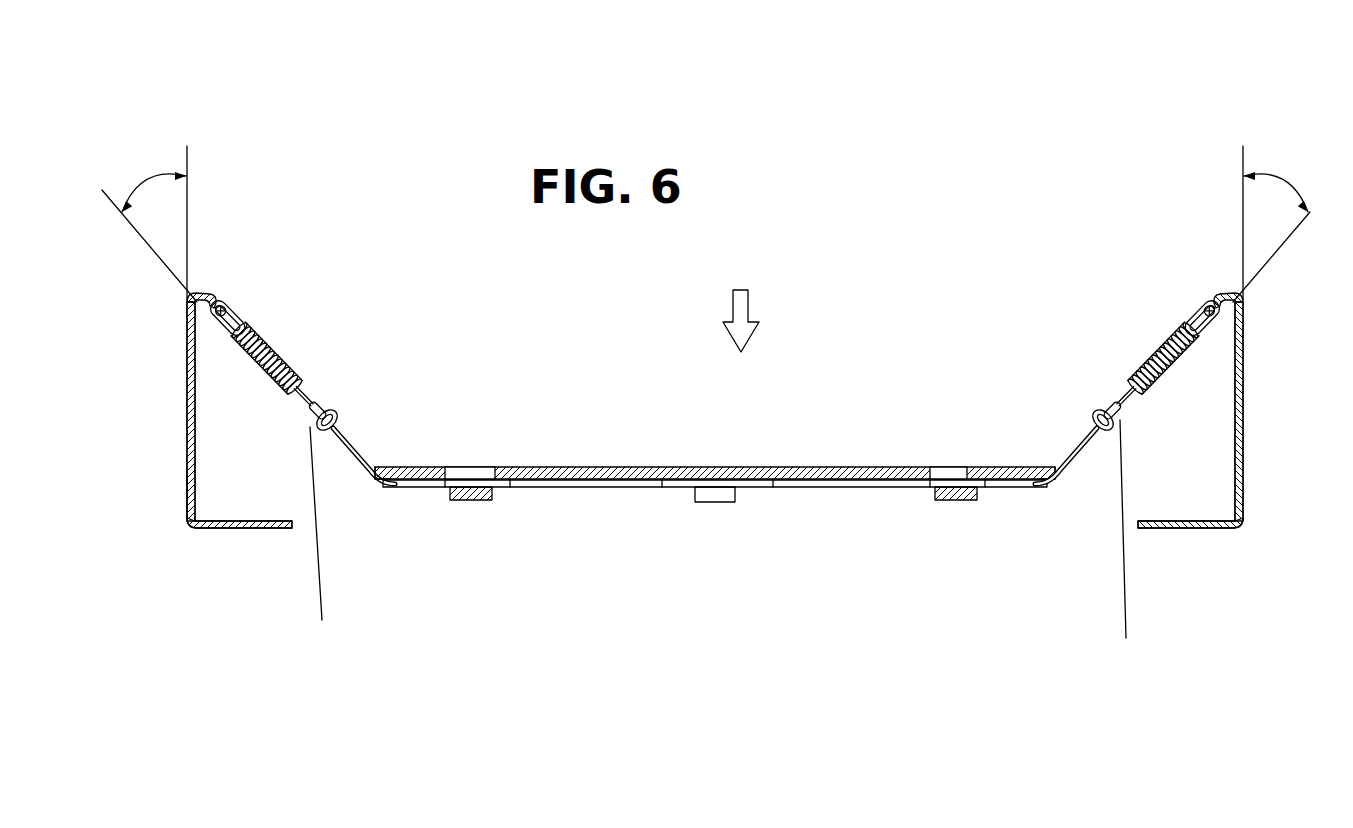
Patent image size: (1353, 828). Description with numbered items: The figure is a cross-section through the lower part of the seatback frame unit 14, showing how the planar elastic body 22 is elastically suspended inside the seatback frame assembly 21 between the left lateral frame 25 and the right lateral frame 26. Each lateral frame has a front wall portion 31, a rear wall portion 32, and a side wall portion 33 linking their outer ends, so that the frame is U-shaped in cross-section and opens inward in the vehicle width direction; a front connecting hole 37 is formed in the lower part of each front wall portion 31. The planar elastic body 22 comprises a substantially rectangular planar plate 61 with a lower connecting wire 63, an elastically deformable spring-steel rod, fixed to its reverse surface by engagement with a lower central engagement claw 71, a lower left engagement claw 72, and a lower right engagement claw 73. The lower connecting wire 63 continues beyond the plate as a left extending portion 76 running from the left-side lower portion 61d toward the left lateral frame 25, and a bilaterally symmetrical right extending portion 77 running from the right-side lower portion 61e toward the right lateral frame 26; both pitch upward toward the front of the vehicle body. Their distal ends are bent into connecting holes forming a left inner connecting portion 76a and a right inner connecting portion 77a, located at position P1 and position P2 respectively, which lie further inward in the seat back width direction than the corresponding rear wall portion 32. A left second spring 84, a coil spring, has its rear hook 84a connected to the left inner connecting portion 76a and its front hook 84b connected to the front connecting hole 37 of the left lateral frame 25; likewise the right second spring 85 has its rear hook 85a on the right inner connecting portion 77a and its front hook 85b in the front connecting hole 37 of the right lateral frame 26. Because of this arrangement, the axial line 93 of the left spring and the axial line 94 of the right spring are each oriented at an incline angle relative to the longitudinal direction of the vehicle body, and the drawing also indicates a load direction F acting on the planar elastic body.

The seatback frame unit 14 is at (917, 224).
The seatback frame assembly 21 is at (183, 351).
The planar elastic body 22 is at (814, 464).
The left lateral frame 25 is at (183, 495).
The right lateral frame 26 is at (1247, 460).
The front wall portion 31 is at (234, 309).
The rear wall portion 32 is at (250, 530).
The side wall portion 33 is at (187, 452).
The front connecting hole 37 is at (212, 302).
The planar plate 61 is at (656, 464).
The left-side lower portion 61d is at (375, 467).
The right-side lower portion 61e is at (1055, 467).
The lower connecting wire 63 is at (803, 490).
The lower central engagement claw 71 is at (710, 503).
The lower left engagement claw 72 is at (383, 480).
The lower right engagement claw 73 is at (958, 500).
The left extending portion 76 is at (353, 463).
The left inner connecting portion 76a is at (333, 418).
The right extending portion 77 is at (1080, 485).
The right inner connecting portion 77a is at (1100, 408).
The left second spring 84 is at (285, 357).
The rear hook 84a is at (315, 400).
The front hook 84b is at (223, 305).
The right second spring 85 is at (1157, 348).
The rear hook 85a is at (1120, 400).
The front hook 85b is at (1200, 303).
The axial line 93 is at (250, 405).
The axial line 94 is at (1167, 413).
The applied force F is at (750, 305).
The position P1 is at (318, 538).
The position P2 is at (1118, 545).